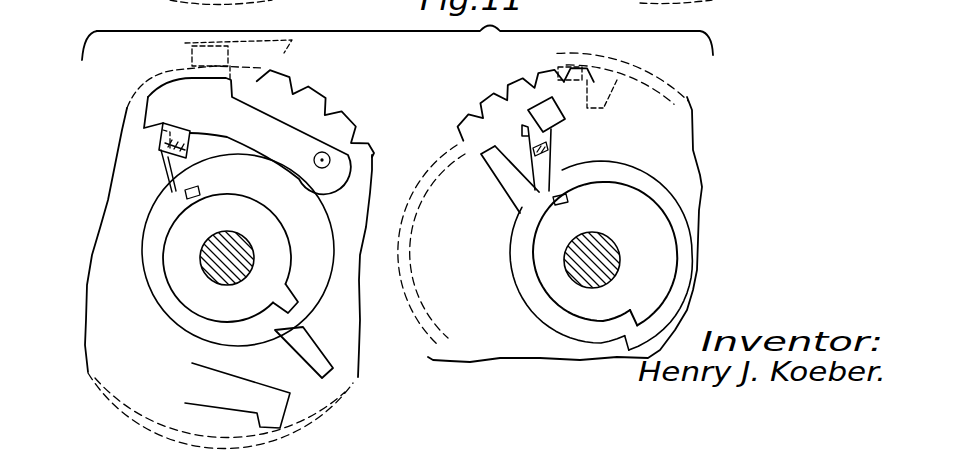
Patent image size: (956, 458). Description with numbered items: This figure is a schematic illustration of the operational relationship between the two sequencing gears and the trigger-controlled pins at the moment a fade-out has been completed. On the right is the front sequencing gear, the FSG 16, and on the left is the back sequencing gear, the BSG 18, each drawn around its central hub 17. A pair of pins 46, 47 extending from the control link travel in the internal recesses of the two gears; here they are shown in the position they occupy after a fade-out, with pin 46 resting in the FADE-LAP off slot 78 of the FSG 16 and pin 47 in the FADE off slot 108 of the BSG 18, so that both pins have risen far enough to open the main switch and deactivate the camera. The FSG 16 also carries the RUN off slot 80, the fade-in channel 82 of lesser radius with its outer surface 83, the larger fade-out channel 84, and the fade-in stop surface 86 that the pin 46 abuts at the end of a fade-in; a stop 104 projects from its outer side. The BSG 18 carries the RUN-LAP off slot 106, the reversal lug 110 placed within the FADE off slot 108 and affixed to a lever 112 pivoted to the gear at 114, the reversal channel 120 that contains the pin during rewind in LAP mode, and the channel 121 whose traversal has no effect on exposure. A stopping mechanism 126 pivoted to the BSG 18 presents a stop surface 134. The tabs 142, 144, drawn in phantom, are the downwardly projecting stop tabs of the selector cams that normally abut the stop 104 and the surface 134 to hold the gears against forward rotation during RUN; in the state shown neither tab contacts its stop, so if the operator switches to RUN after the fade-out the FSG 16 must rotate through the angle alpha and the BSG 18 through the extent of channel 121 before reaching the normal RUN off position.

The FSG 16 is at (462, 143).
The shaft hub 17 is at (237, 232).
The BSG 18 is at (343, 117).
The pin 46 is at (560, 143).
The pin 47 is at (193, 133).
The off slot 78 is at (524, 129).
The off slot 80 is at (490, 167).
The fade-in channel 82 is at (510, 241).
The outer surface 83 is at (521, 297).
The fade-out channel 84 is at (652, 186).
The fade-in stop surface 86 is at (626, 340).
The stop 104 is at (550, 83).
The RUN-LAP off slot 106 is at (300, 353).
The FADE off slot 108 is at (165, 160).
The reversal lug 110 is at (170, 133).
The lever 112 is at (285, 128).
The pivot 114 is at (330, 160).
The reversal channel 120 is at (318, 250).
The channel 121 is at (155, 288).
The stopping mechanism 126 is at (717, 0).
The stop surface 134 is at (257, 418).
The tab 142 is at (632, 66).
The tab 144 is at (258, 83).